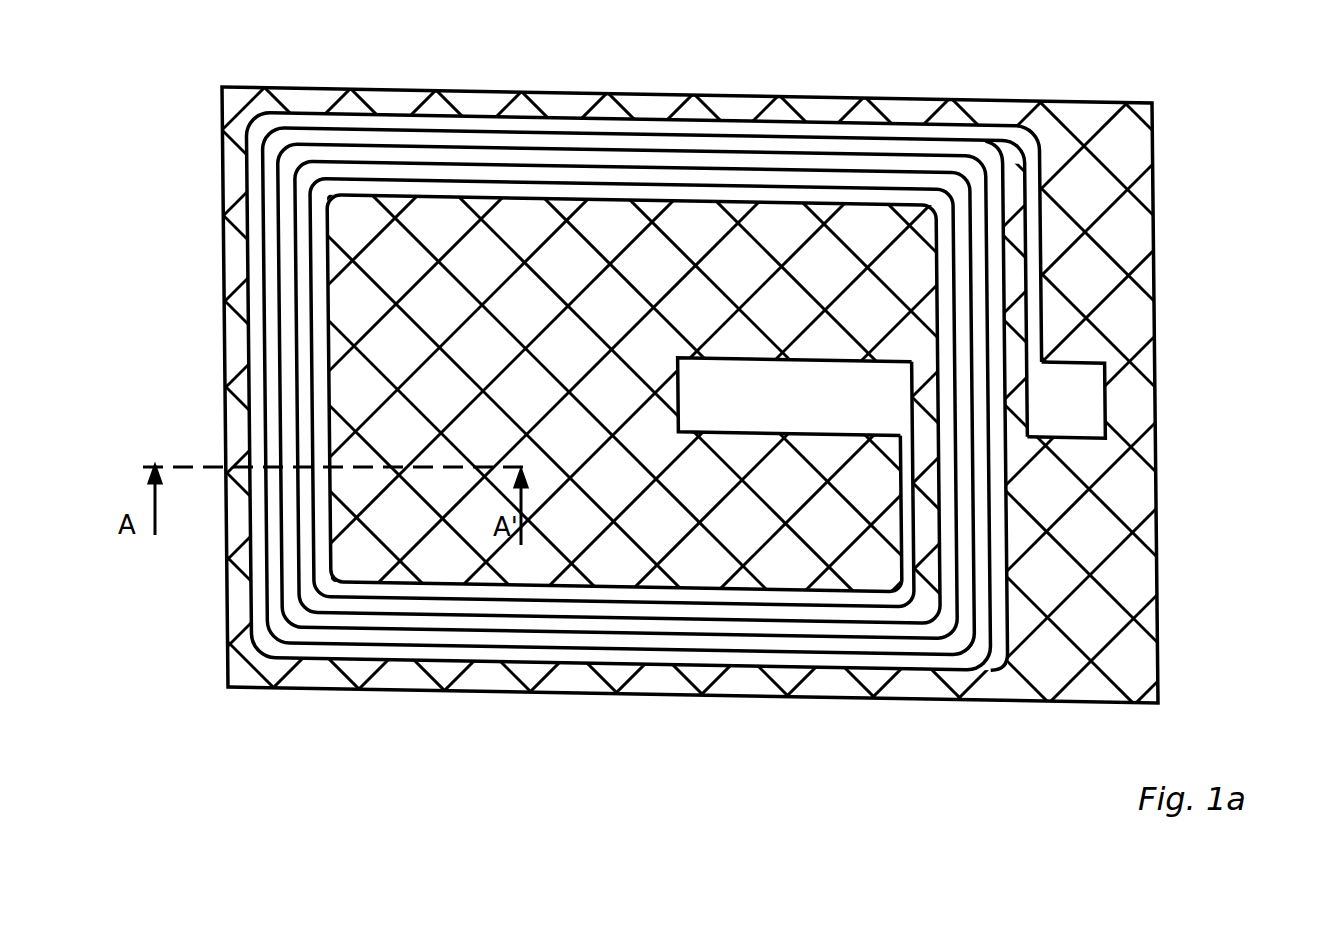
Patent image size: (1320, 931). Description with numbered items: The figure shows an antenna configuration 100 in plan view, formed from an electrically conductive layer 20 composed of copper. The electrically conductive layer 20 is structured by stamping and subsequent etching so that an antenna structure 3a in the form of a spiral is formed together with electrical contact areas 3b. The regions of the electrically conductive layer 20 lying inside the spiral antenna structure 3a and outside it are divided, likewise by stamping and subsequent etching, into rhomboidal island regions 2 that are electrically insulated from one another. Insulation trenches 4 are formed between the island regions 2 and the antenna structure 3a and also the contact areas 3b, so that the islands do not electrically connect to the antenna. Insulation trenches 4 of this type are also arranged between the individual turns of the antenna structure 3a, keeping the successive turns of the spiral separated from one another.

The antenna configuration 100 is at (1163, 625).
The island regions 2 is at (723, 465).
The electrically conductive layer 20 is at (1120, 156).
The antenna structure 3a is at (275, 234).
The electrical contact areas 3b is at (875, 378).
The insulation trenches 4 is at (228, 467).